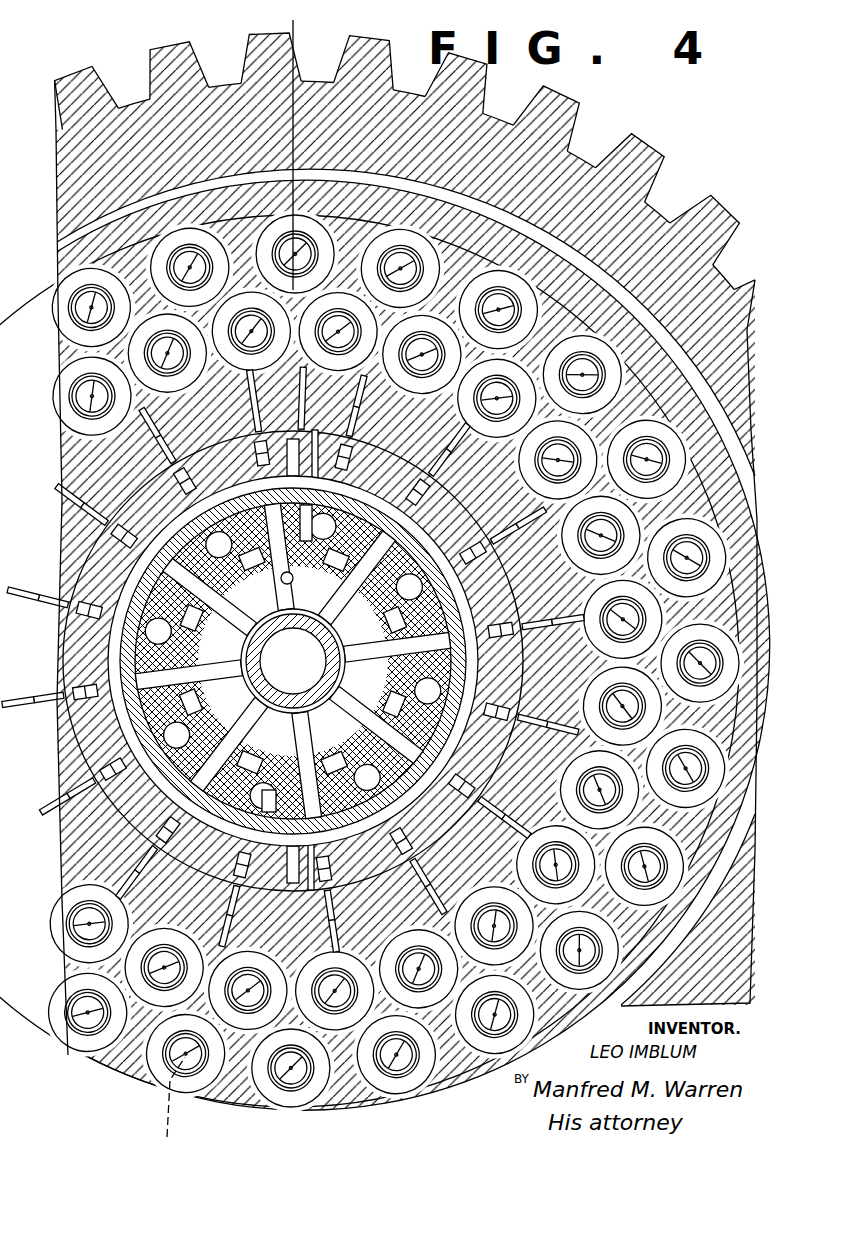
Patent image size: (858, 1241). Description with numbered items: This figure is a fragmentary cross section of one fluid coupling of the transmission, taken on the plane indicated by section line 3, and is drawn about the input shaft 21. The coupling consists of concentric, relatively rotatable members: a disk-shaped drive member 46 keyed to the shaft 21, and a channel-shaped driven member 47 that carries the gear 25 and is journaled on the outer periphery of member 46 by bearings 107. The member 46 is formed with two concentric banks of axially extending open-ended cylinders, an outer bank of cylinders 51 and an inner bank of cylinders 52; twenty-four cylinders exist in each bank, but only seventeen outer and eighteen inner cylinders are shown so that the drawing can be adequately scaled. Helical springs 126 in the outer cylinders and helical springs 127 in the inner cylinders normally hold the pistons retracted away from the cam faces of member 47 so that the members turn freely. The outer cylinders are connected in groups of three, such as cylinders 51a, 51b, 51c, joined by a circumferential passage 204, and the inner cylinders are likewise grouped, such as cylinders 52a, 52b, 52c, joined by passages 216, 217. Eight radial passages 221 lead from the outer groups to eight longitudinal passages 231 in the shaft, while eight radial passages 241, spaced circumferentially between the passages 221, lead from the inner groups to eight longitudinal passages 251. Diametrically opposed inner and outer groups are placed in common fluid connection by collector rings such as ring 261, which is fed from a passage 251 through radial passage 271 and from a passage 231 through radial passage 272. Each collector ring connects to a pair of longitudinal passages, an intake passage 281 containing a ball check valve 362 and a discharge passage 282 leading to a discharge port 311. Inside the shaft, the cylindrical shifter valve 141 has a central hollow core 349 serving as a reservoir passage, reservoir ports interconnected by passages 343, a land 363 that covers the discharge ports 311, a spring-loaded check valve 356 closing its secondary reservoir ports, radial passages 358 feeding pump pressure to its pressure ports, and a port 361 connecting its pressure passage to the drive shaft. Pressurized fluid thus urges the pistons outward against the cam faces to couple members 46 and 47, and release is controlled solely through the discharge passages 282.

The section line 3- 3 is at (293, 20).
The input shaft 21 is at (78, 743).
The gear 25 is at (682, 172).
The drive member 46 is at (70, 463).
The driven member 47 is at (68, 189).
The outer bank cylinders 51 is at (162, 246).
The outer bank cylinder 51a is at (225, 1112).
The outer bank cylinder 51b is at (335, 1118).
The outer bank cylinder 51c is at (445, 1112).
The inner bank cylinders 52 is at (62, 396).
The inner bank cylinder 52a is at (172, 337).
The inner bank cylinder 52b is at (250, 330).
The inner bank cylinder 52c is at (312, 322).
The bearings 107 is at (62, 230).
The helical spring 126 is at (68, 316).
The helical spring 127 is at (70, 412).
The shifter valve 141 is at (165, 658).
The circumferential passage 204 is at (375, 1120).
The passage 216 is at (255, 366).
The passage 217 is at (290, 366).
The radial passage 221 is at (165, 450).
The longitudinal passage 231 is at (180, 480).
The radial passage 241 is at (252, 414).
The longitudinal passage 251 is at (258, 430).
The fluid collecting ring 261 is at (67, 572).
The radial passage 271 is at (285, 468).
The radial passage 272 is at (262, 840).
The intake passage 281 is at (290, 845).
The discharge passage 282 is at (314, 480).
The discharge port 311 is at (301, 661).
The passage 343 is at (200, 708).
The central hollow core 349 is at (306, 660).
The spring loaded check valve 356 is at (282, 582).
The radial passage 358 is at (306, 660).
The port 361 is at (246, 656).
The ball check valve 362 is at (266, 806).
The land 363 is at (302, 523).